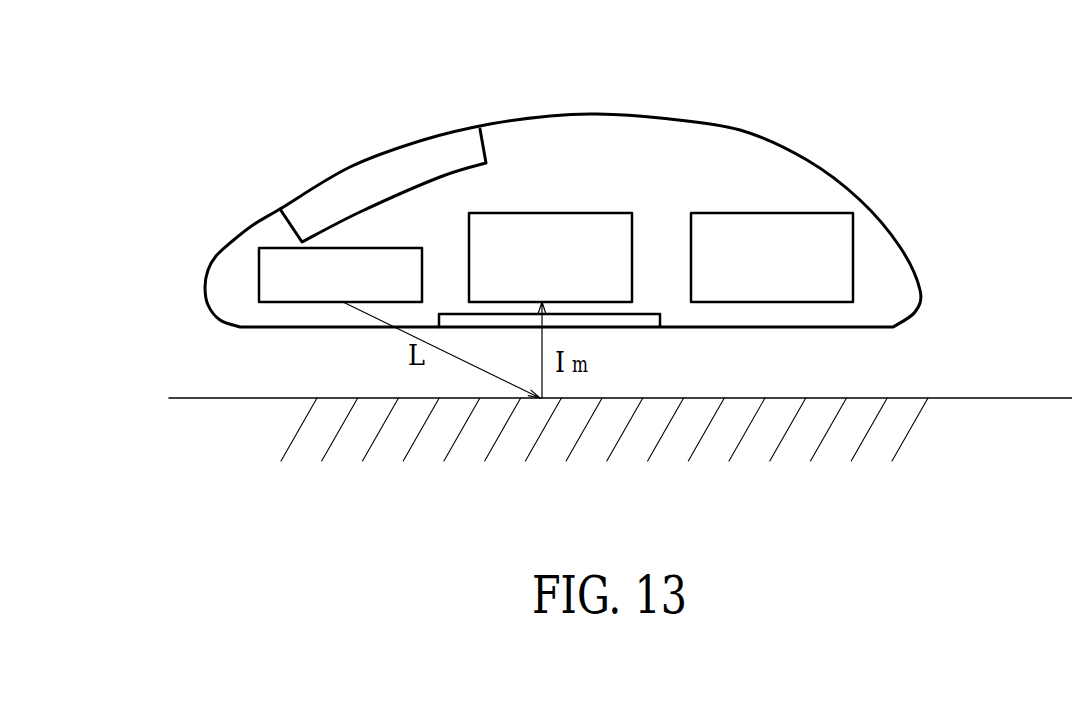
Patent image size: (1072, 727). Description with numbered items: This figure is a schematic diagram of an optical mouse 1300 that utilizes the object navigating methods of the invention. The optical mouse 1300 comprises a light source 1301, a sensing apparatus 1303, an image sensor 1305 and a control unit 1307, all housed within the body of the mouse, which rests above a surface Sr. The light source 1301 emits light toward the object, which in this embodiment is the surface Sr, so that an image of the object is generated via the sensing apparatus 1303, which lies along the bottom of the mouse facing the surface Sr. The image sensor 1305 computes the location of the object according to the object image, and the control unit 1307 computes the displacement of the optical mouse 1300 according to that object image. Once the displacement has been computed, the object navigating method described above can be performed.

The optical mouse 1300 is at (650, 117).
The light source 1301 is at (258, 270).
The sensing apparatus 1303 is at (654, 327).
The image sensor 1305 is at (565, 213).
The control unit 1307 is at (765, 213).
The surface Sr is at (998, 398).